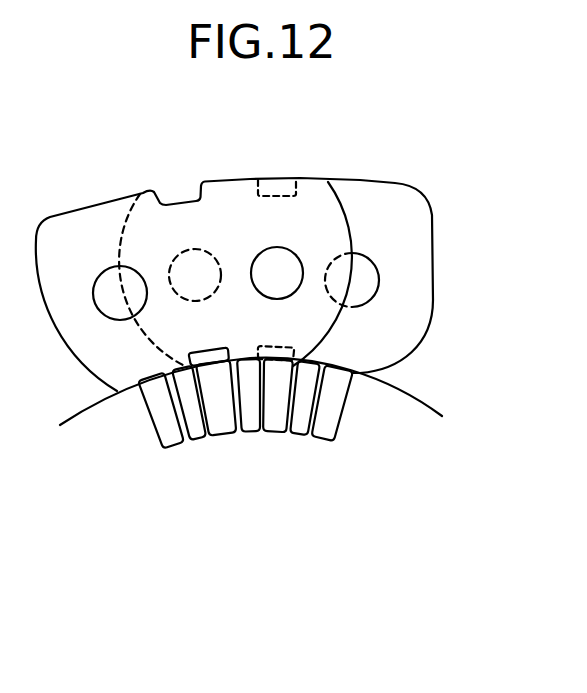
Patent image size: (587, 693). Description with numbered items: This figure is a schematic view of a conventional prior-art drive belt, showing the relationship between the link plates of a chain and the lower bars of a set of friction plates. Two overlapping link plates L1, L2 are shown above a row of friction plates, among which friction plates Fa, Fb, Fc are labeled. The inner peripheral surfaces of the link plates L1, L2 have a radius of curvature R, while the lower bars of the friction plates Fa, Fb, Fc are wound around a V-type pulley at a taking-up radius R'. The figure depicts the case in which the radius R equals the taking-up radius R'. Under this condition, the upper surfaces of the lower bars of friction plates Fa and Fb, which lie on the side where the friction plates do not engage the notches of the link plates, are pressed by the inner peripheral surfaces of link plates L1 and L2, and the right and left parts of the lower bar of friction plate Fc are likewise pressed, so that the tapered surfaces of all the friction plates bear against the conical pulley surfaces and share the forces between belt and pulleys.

The link plate L1 is at (310, 207).
The link plate L2 is at (408, 224).
The friction plate Fa is at (222, 423).
The friction plate Fb is at (273, 423).
The friction plate Fc is at (245, 427).
The radius of curvature R is at (133, 514).
The taking-up radius R' is at (380, 509).